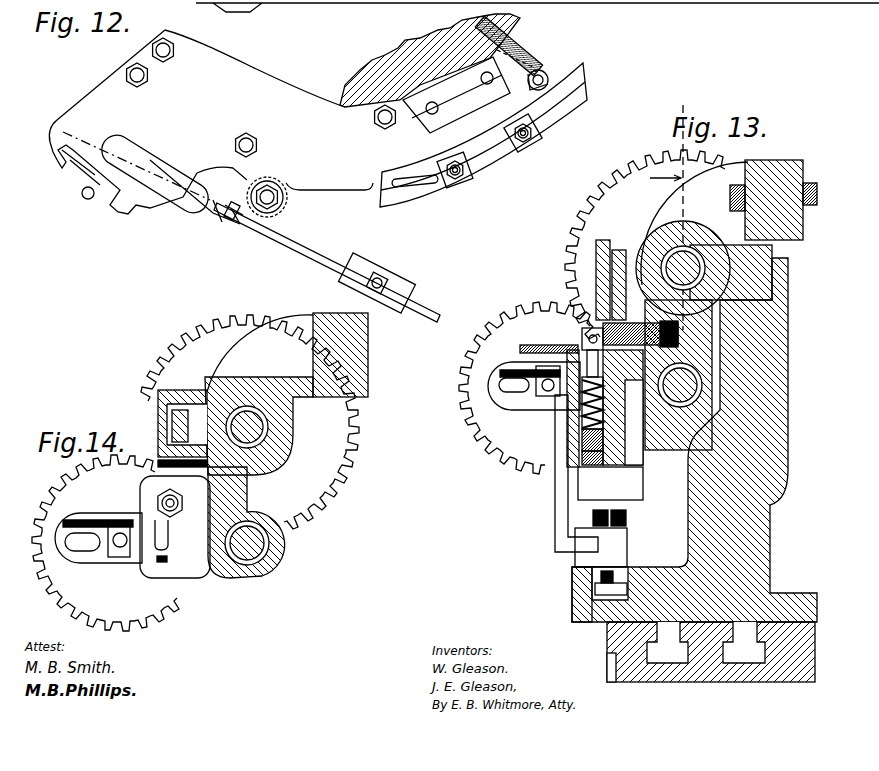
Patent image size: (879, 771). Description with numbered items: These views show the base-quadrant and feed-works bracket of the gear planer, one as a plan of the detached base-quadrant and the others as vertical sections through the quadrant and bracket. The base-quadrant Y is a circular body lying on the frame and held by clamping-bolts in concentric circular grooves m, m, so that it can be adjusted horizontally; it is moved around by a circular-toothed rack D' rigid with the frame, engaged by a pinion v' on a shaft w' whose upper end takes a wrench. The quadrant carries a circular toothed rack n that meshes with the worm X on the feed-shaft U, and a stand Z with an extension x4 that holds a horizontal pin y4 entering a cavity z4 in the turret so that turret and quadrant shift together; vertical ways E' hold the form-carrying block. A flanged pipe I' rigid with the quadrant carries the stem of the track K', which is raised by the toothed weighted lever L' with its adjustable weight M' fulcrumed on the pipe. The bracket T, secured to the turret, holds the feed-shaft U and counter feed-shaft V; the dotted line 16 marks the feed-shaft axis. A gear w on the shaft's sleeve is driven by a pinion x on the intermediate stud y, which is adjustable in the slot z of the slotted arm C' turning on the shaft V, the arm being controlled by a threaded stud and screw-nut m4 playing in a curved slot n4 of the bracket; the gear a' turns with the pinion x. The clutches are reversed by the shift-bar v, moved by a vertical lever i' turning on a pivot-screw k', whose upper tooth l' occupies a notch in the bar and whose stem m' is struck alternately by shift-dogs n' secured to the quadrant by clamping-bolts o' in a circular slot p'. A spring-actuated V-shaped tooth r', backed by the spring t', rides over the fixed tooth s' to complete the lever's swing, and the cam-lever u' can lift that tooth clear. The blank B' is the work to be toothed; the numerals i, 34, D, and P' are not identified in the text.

In FIG. 12, the bolt i is at (270, 106).
In FIG. 12, the base-quadrant Y is at (184, 97).
In FIG. 13, the base-quadrant Y is at (576, 594).
In FIG. 12, the track or shoe K' is at (138, 164).
In FIG. 12, the flanged sleeve or pipe I' is at (196, 170).
In FIG. 12, the stop 34 is at (72, 132).
In FIG. 12, the vertical ways E' is at (112, 229).
In FIG. 12, the shaft w' is at (270, 182).
In FIG. 12, the pinion v' is at (256, 234).
In FIG. 12, the toothed weighted lever L' is at (327, 262).
In FIG. 12, the adjustable weight M' is at (377, 278).
In FIG. 12, the frame D is at (416, 60).
In FIG. 12, the stand of the base-quadrant Z is at (423, 90).
In FIG. 12, the cavity z4 is at (478, 22).
In FIG. 12, the extension x4 is at (522, 54).
In FIG. 12, the horizontal pin y4 is at (549, 78).
In FIG. 12, the segment P' is at (488, 135).
In FIG. 12, the adjustable heads or shift-dogs n' is at (492, 163).
In FIG. 13, the adjustable heads or shift-dogs n' is at (617, 538).
In FIG. 13, the bracket T is at (786, 160).
In FIG. 14, the bracket T is at (290, 441).
In FIG. 13, the gear w is at (645, 240).
In FIG. 14, the gear w is at (250, 422).
In FIG. 13, the worm X is at (640, 240).
In FIG. 13, the feed-shaft U is at (668, 244).
In FIG. 14, the feed-shaft U is at (247, 410).
In FIG. 13, the dotted line 16 is at (696, 203).
In FIG. 13, the circular toothed rack n is at (821, 193).
In FIG. 13, the shift-bar v is at (569, 248).
In FIG. 14, the shift-bar v is at (182, 412).
In FIG. 13, the tooth l' is at (574, 273).
In FIG. 13, the cam-lever u' is at (540, 318).
In FIG. 13, the gear a' is at (524, 388).
In FIG. 14, the gear a' is at (116, 546).
In FIG. 13, the slotted arm C' is at (534, 368).
In FIG. 14, the slotted arm C' is at (98, 522).
In FIG. 13, the slot z is at (505, 385).
In FIG. 14, the slot z is at (88, 550).
In FIG. 13, the intermediate stud y is at (546, 392).
In FIG. 14, the intermediate stud y is at (121, 550).
In FIG. 13, the spring-actuated V-shaped tooth r' is at (570, 410).
In FIG. 13, the spring t' is at (630, 393).
In FIG. 13, the pivot-screw k' is at (659, 447).
In FIG. 13, the counter feed-shaft V is at (678, 375).
In FIG. 14, the counter feed-shaft V is at (247, 561).
In FIG. 13, the vertical lever i' is at (539, 422).
In FIG. 13, the fixed tooth s' is at (610, 483).
In FIG. 13, the stem m' is at (559, 473).
In FIG. 13, the circular slot p' is at (577, 612).
In FIG. 13, the clamping-bolts o' is at (594, 615).
In FIG. 13, the circular-toothed rack D' is at (640, 689).
In FIG. 13, the blank B' is at (711, 667).
In FIG. 13, the circular grooves m is at (706, 642).
In FIG. 14, the pinion x is at (140, 478).
In FIG. 14, the curved slot n4 is at (190, 479).
In FIG. 14, the threaded stud and screw-nut m4 is at (170, 524).